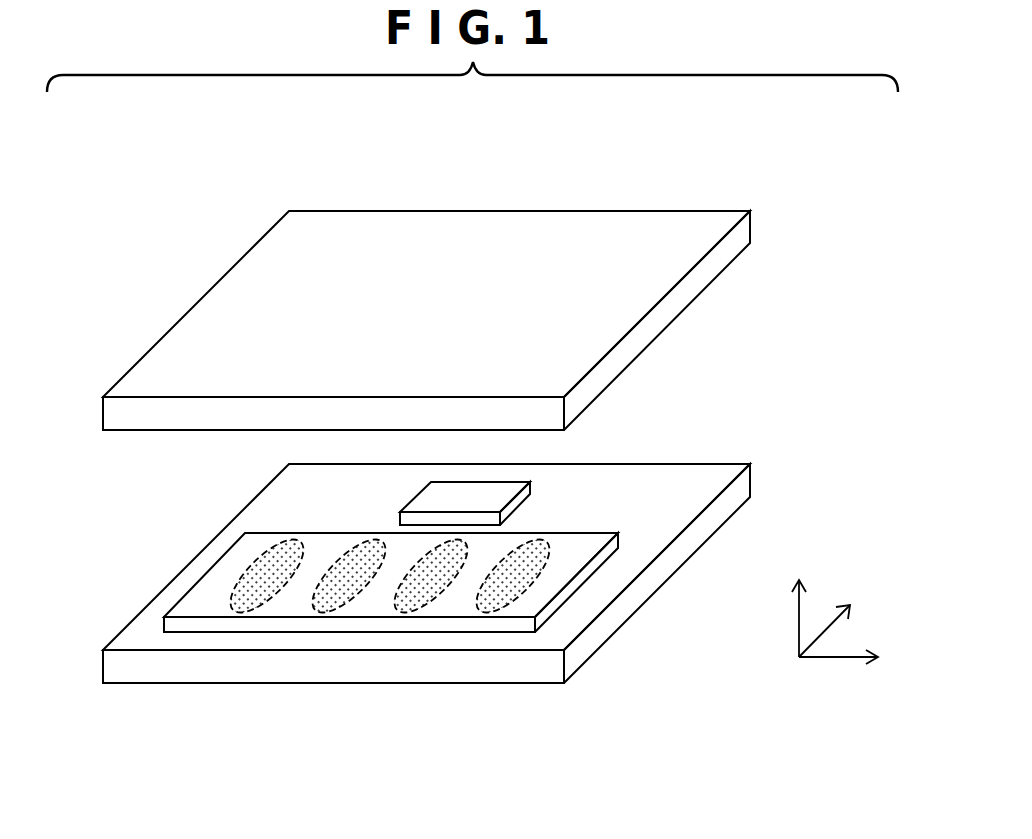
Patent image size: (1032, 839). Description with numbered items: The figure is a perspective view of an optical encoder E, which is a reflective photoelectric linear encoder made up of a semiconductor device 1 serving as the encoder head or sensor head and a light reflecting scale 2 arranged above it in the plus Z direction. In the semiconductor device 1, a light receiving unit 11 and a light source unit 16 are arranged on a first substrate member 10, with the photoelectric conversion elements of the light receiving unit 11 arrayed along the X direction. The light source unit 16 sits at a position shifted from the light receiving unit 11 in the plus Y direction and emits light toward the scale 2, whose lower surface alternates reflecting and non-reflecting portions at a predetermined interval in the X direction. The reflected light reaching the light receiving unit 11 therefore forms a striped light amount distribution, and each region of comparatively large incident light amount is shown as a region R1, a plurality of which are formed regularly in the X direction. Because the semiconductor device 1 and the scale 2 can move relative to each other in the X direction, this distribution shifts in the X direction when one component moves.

The optical encoder E is at (118, 180).
The semiconductor device 1 is at (183, 545).
The light reflecting scale 2 is at (698, 298).
The first substrate member 10 is at (619, 620).
The light receiving unit 11 is at (441, 630).
The light source unit 16 is at (531, 489).
The region R1 is at (353, 600).